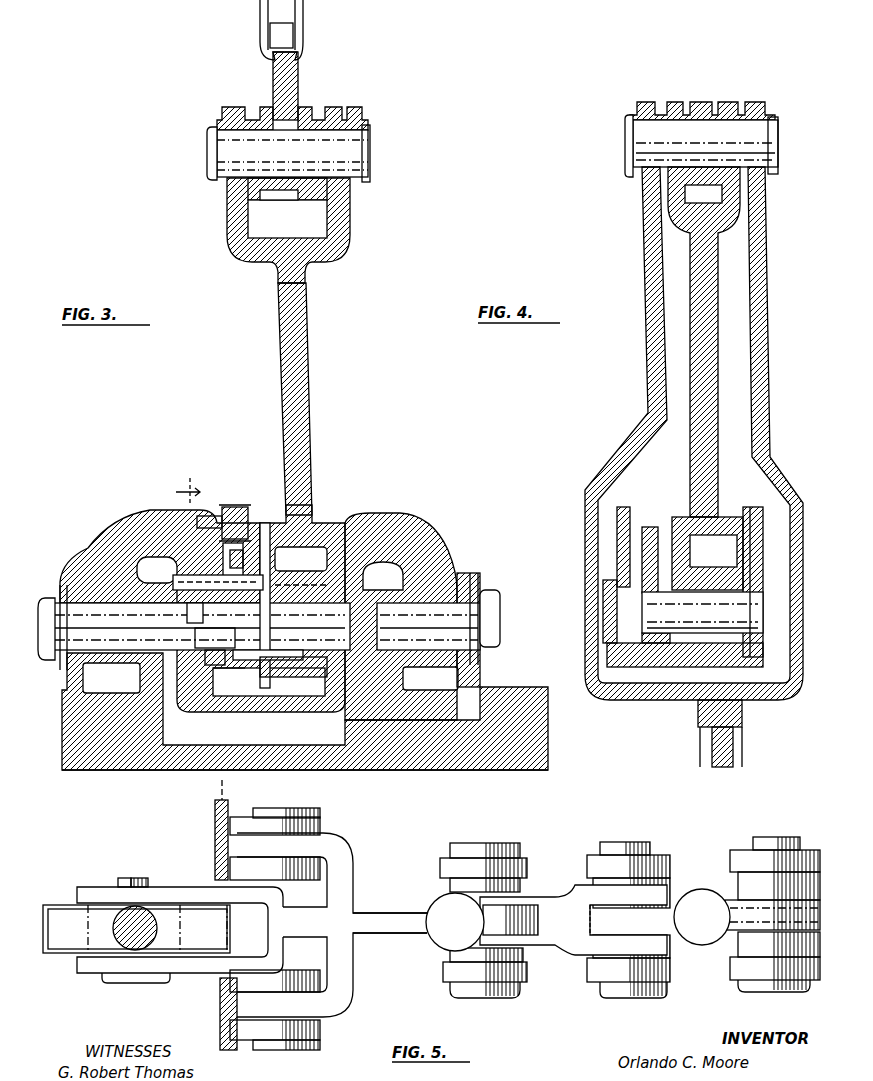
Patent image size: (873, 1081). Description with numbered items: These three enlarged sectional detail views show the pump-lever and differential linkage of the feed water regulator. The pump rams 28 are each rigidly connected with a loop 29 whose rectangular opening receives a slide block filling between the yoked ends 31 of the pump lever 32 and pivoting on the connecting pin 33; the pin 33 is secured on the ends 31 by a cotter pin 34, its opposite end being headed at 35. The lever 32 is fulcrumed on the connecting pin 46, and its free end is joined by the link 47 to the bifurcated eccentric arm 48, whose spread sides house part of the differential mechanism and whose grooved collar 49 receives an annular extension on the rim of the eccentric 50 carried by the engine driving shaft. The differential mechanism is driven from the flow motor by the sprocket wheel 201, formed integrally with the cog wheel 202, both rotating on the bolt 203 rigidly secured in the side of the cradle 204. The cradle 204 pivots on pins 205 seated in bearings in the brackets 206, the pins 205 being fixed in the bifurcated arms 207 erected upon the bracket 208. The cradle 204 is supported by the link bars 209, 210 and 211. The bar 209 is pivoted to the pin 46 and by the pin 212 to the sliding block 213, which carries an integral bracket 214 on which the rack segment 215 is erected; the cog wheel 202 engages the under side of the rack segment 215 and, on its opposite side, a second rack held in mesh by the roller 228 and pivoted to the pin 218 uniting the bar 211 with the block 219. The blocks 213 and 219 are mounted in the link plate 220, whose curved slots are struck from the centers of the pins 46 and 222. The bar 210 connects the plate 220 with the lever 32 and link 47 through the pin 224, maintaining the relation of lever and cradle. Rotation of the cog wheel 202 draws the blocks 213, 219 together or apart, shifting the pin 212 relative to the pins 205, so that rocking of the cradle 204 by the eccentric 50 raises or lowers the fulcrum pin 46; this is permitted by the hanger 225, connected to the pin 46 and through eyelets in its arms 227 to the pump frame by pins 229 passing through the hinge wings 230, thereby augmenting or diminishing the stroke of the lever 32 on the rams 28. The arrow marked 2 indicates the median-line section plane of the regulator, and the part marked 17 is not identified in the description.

In FIG. 3, the hanger 225 is at (278, 86).
In FIG. 5, the hanger 225 is at (385, 912).
In FIG. 3, the pump lever 32 is at (312, 108).
In FIG. 5, the pump lever 32 is at (290, 912).
In FIG. 3, the connecting pin 46 is at (225, 148).
In FIG. 5, the connecting pin 46 is at (508, 998).
In FIG. 3, the link bar 209 is at (297, 400).
In FIG. 5, the link bar 209 is at (440, 862).
In FIG. 3, the section line 2 is at (188, 479).
In FIG. 5, the section line 2 is at (219, 789).
In FIG. 3, the roller 228 is at (238, 505).
In FIG. 3, the bolt 203 is at (128, 540).
In FIG. 3, the brackets 206 is at (102, 568).
In FIG. 3, the pins 205 is at (52, 603).
In FIG. 3, the link plate 220 is at (310, 575).
In FIG. 3, the cog wheel 202 is at (215, 612).
In FIG. 3, the sprocket wheel 201 is at (222, 638).
In FIG. 3, the rack segment 215 is at (222, 652).
In FIG. 3, the bracket 214 is at (245, 672).
In FIG. 3, the pin 212 is at (280, 660).
In FIG. 3, the sliding block 213 is at (308, 678).
In FIG. 3, the cradle 204 is at (270, 705).
In FIG. 3, the bifurcated arms 207 is at (480, 680).
In FIG. 3, the bracket 208 is at (522, 762).
In FIG. 4, the rack teeth 17 is at (707, 103).
In FIG. 4, the pin 222 is at (630, 150).
In FIG. 5, the pin 222 is at (780, 992).
In FIG. 4, the bifurcated eccentric arm 48 is at (652, 368).
In FIG. 5, the bifurcated eccentric arm 48 is at (735, 855).
In FIG. 4, the link bar 211 is at (705, 458).
In FIG. 5, the link bar 211 is at (735, 880).
In FIG. 4, the block 219 is at (698, 530).
In FIG. 4, the pin 218 is at (645, 612).
In FIG. 4, the collar 49 is at (750, 712).
In FIG. 4, the eccentric 50 is at (712, 748).
In FIG. 5, the arms 227 is at (303, 847).
In FIG. 5, the pins 229 is at (290, 808).
In FIG. 5, the hinge wings 230 is at (318, 822).
In FIG. 5, the loop 29 is at (62, 915).
In FIG. 5, the yoked ends 31 is at (103, 897).
In FIG. 5, the cotter pin 34 is at (124, 878).
In FIG. 5, the connecting pin 33 is at (142, 878).
In FIG. 5, the pump rams 28 is at (146, 928).
In FIG. 5, the head 35 is at (147, 985).
In FIG. 5, the link bar 210 is at (670, 855).
In FIG. 5, the pin 224 is at (628, 1000).
In FIG. 5, the link 47 is at (688, 905).